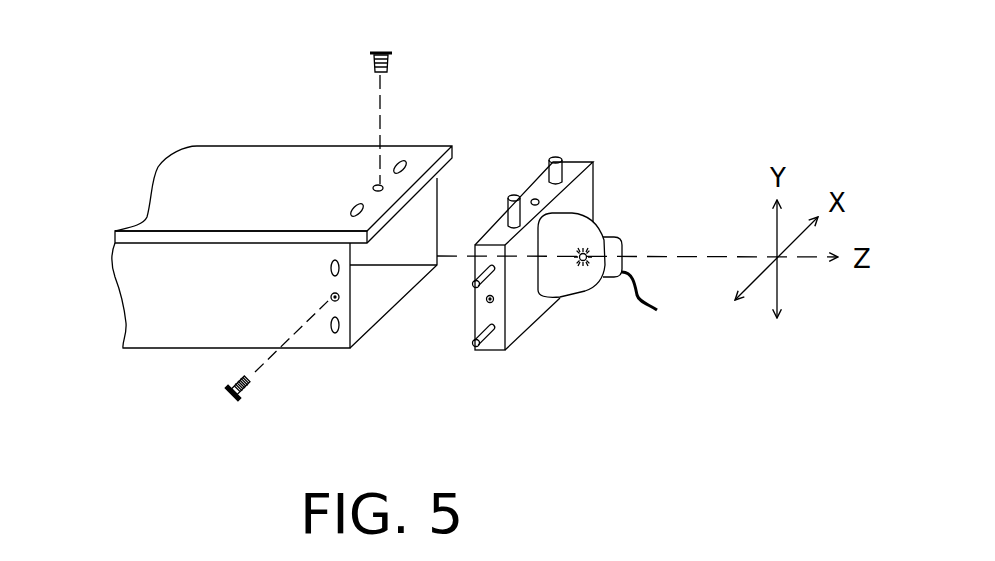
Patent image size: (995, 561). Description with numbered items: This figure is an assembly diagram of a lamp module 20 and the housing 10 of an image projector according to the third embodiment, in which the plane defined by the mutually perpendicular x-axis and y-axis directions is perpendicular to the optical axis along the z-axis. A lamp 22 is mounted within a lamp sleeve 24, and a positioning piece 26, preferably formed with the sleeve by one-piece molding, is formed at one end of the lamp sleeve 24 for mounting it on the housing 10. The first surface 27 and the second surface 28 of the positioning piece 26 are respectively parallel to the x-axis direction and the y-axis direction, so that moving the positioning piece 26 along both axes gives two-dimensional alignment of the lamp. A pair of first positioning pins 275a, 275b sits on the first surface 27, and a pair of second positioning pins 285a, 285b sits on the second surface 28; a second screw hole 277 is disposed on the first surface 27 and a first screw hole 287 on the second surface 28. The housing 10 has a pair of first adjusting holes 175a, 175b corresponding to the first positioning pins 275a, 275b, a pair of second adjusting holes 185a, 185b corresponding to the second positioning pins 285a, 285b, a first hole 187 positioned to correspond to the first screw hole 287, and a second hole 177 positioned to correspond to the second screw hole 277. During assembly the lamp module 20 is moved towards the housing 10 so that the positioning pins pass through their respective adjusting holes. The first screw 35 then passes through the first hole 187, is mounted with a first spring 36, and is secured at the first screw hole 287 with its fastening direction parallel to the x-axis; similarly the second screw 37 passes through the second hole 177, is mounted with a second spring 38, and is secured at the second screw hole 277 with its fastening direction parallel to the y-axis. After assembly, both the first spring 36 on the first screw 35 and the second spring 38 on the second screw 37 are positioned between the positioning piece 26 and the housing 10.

The housing 10 is at (151, 177).
The first adjusting hole 175a is at (398, 163).
The first adjusting hole 175b is at (354, 206).
The second hole 177 is at (375, 185).
The second adjusting hole 185a is at (330, 266).
The second adjusting hole 185b is at (329, 328).
The first hole 187 is at (330, 297).
The first screw 35 is at (232, 398).
The first spring 36 is at (236, 380).
The second screw 37 is at (386, 51).
The second spring 38 is at (389, 64).
The lamp module 20 is at (550, 227).
The lamp 22 is at (587, 249).
The lamp sleeve 24 is at (581, 300).
The positioning piece 26 is at (535, 326).
The first surface 27 is at (575, 159).
The second surface 28 is at (495, 352).
The first positioning pin 275a is at (556, 156).
The first positioning pin 275b is at (512, 194).
The second screw hole 277 is at (540, 201).
The second positioning pin 285a is at (471, 284).
The second positioning pin 285b is at (473, 345).
The first screw hole 287 is at (487, 302).